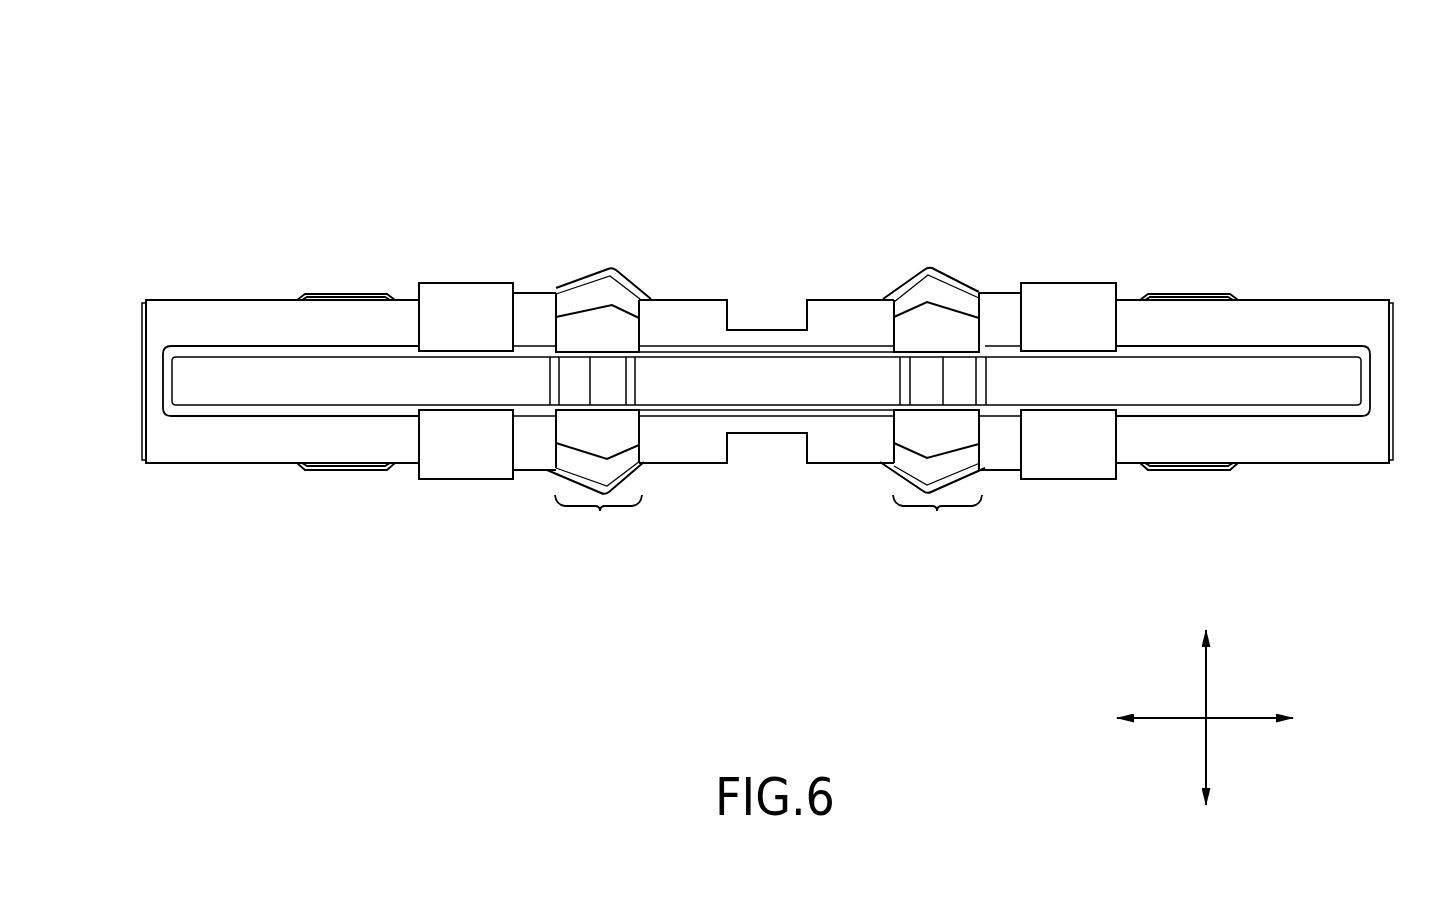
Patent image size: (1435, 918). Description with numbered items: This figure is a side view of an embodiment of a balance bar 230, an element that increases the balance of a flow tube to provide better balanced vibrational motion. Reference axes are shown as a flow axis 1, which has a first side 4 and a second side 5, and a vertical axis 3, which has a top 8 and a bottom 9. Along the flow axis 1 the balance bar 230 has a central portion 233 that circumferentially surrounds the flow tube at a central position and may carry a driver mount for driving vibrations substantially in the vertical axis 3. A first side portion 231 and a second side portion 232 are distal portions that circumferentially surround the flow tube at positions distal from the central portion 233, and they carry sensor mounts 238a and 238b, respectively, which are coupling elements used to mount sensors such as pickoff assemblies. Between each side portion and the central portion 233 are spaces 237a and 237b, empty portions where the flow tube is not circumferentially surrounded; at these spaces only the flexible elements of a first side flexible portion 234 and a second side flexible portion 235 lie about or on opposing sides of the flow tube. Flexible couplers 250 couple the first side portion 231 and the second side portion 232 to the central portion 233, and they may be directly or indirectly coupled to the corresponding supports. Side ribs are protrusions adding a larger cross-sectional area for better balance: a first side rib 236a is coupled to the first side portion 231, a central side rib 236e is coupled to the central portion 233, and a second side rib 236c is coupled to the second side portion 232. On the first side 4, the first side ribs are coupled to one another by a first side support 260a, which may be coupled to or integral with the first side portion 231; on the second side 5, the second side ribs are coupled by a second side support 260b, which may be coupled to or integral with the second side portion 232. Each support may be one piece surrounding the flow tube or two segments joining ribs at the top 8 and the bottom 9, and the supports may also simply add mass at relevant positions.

The balance bar 230 is at (1255, 147).
The first side portion 231 is at (530, 328).
The second side portion 232 is at (998, 305).
The central portion 233 is at (828, 311).
The first side flexible portion 234 is at (598, 421).
The second side flexible portion 235 is at (937, 420).
The first side rib 236a is at (266, 388).
The central side rib 236e is at (822, 385).
The second side rib 236c is at (1290, 390).
The space 237a is at (605, 327).
The space 237b is at (937, 333).
The sensor mount 238a is at (317, 297).
The sensor mount 238b is at (1208, 294).
The flexible coupler 250 is at (582, 291).
The first side support 260a is at (450, 307).
The second side support 260b is at (1090, 308).
The flow axis 1 is at (1167, 720).
The vertical axis 3 is at (1207, 688).
The first side 4 is at (1127, 718).
The second side 5 is at (1287, 718).
The top 8 is at (1200, 640).
The bottom 9 is at (1208, 793).